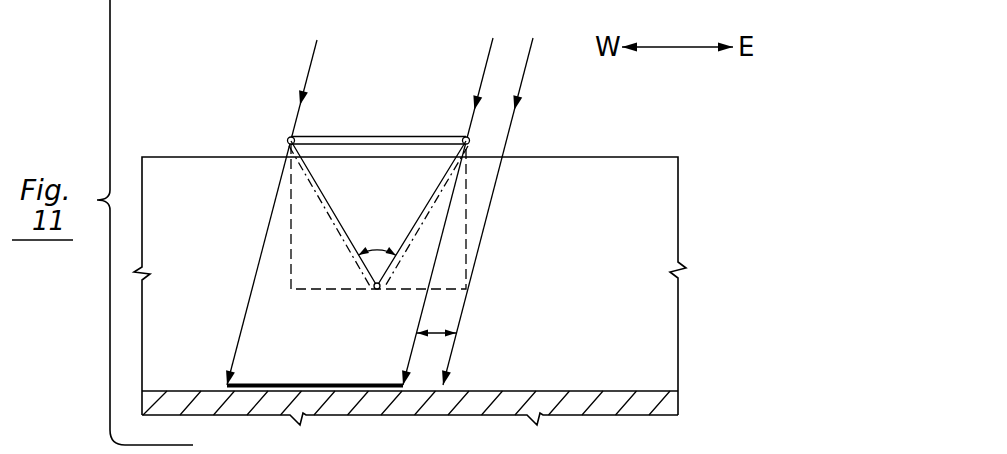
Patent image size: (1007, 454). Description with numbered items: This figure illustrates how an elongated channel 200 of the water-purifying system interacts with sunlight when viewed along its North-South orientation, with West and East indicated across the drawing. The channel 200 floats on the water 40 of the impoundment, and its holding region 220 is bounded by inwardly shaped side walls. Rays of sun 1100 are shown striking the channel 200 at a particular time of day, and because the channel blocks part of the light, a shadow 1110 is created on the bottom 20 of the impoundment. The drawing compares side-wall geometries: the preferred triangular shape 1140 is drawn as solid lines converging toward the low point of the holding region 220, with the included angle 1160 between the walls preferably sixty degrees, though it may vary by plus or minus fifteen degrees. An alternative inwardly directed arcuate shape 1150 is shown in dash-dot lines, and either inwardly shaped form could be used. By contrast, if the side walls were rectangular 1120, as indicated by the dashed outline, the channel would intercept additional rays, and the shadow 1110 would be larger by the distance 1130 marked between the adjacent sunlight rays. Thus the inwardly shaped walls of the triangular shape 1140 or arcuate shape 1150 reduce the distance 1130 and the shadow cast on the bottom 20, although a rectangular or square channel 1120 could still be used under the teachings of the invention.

The bottom 20 is at (585, 400).
The water 40 is at (610, 275).
The elongated channel 200 is at (369, 124).
The holding region 220 is at (405, 230).
The rays of sun 1100 is at (312, 60).
The shadow 1110 is at (315, 387).
The rectangular side walls 1120 is at (467, 200).
The distance 1130 is at (447, 315).
The triangular shape 1140 is at (328, 203).
The arcuate shape 1150 is at (335, 250).
The angle 1160 is at (380, 255).